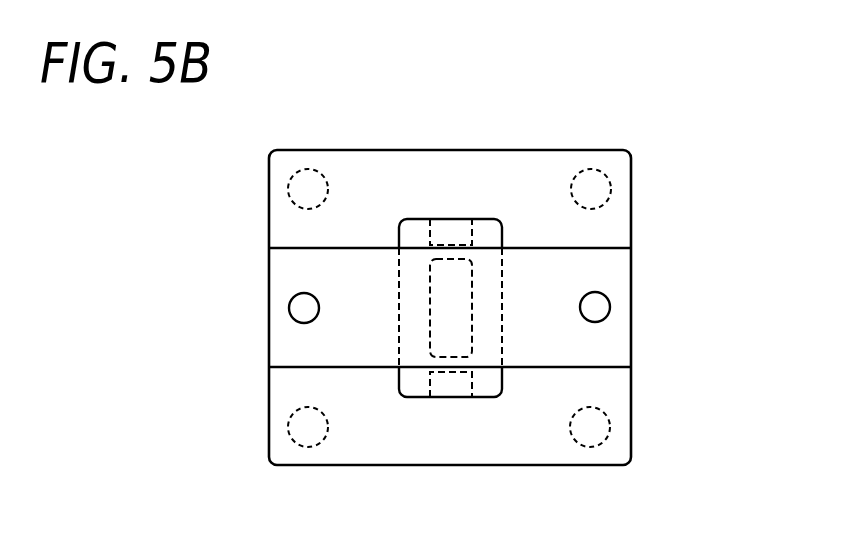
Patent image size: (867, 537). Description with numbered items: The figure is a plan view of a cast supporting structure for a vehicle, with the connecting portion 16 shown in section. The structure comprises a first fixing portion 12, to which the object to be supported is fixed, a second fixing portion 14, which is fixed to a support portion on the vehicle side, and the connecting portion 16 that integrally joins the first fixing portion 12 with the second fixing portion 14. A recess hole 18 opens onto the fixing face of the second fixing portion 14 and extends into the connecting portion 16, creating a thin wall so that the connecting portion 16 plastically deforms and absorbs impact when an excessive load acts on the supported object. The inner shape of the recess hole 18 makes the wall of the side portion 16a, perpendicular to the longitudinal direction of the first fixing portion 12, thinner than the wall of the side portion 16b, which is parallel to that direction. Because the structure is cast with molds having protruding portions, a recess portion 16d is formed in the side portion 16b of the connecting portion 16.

The first fixing portion 12 is at (305, 347).
The second fixing portion 14 is at (360, 442).
The connecting portion 16 is at (473, 302).
The side portion 16a is at (492, 268).
The side portion 16b is at (418, 230).
The recess portion 16d is at (452, 230).
The recess hole 18 is at (450, 288).